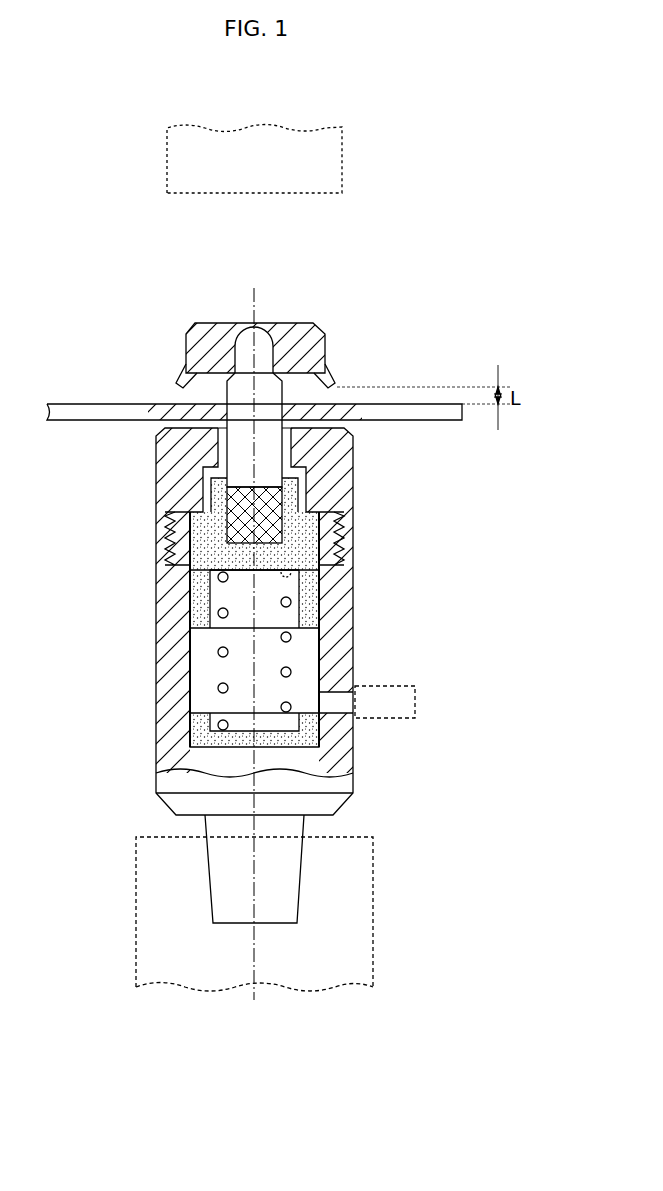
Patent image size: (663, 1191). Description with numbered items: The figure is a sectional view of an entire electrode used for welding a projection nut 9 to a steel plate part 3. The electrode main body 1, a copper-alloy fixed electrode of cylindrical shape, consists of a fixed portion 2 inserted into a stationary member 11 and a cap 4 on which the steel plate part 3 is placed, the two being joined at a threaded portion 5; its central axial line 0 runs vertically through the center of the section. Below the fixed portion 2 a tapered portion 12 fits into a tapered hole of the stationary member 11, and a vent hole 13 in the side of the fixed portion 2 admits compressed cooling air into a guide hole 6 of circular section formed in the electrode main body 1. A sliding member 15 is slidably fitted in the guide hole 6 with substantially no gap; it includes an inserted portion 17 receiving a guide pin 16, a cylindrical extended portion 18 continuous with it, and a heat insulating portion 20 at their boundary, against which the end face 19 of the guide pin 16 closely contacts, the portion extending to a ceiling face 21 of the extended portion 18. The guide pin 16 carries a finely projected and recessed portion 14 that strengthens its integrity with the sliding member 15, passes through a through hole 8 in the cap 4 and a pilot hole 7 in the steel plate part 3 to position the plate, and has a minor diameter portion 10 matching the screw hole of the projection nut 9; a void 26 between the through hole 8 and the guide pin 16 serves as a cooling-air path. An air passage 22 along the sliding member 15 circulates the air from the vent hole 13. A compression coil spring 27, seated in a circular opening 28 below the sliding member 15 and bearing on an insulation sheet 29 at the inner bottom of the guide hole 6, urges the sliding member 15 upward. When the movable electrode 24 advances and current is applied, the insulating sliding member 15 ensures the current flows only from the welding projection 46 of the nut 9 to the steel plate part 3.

The central axial line 0 is at (253, 647).
The electrode main body 1 is at (137, 745).
The fixed portion 2 is at (178, 783).
The steel plate part 3 is at (78, 404).
The cap 4 is at (156, 440).
The threaded portion 5 is at (170, 537).
The guide hole 6 is at (185, 690).
The pilot hole 7 is at (225, 404).
The through hole 8 is at (293, 445).
The projection nut 9 is at (325, 330).
The minor diameter portion 10 is at (262, 330).
The stationary member 11 is at (373, 928).
The tapered portion 12 is at (300, 880).
The vent hole 13 is at (358, 710).
The projected and recessed portion 14 is at (235, 500).
The sliding member 15 is at (319, 570).
The guide pin 16 is at (327, 371).
The inserted portion 17 is at (340, 530).
The extended portion 18 is at (310, 620).
The end face 19 is at (215, 570).
The heat insulating portion 20 is at (218, 603).
The ceiling face 21 is at (277, 592).
The air passage 22 is at (322, 590).
The movable electrode 24 is at (342, 148).
The void 26 is at (205, 470).
The compression coil spring 27 is at (345, 685).
The opening 28 is at (210, 640).
The insulation sheet 29 is at (268, 760).
The welding projection 46 is at (178, 383).